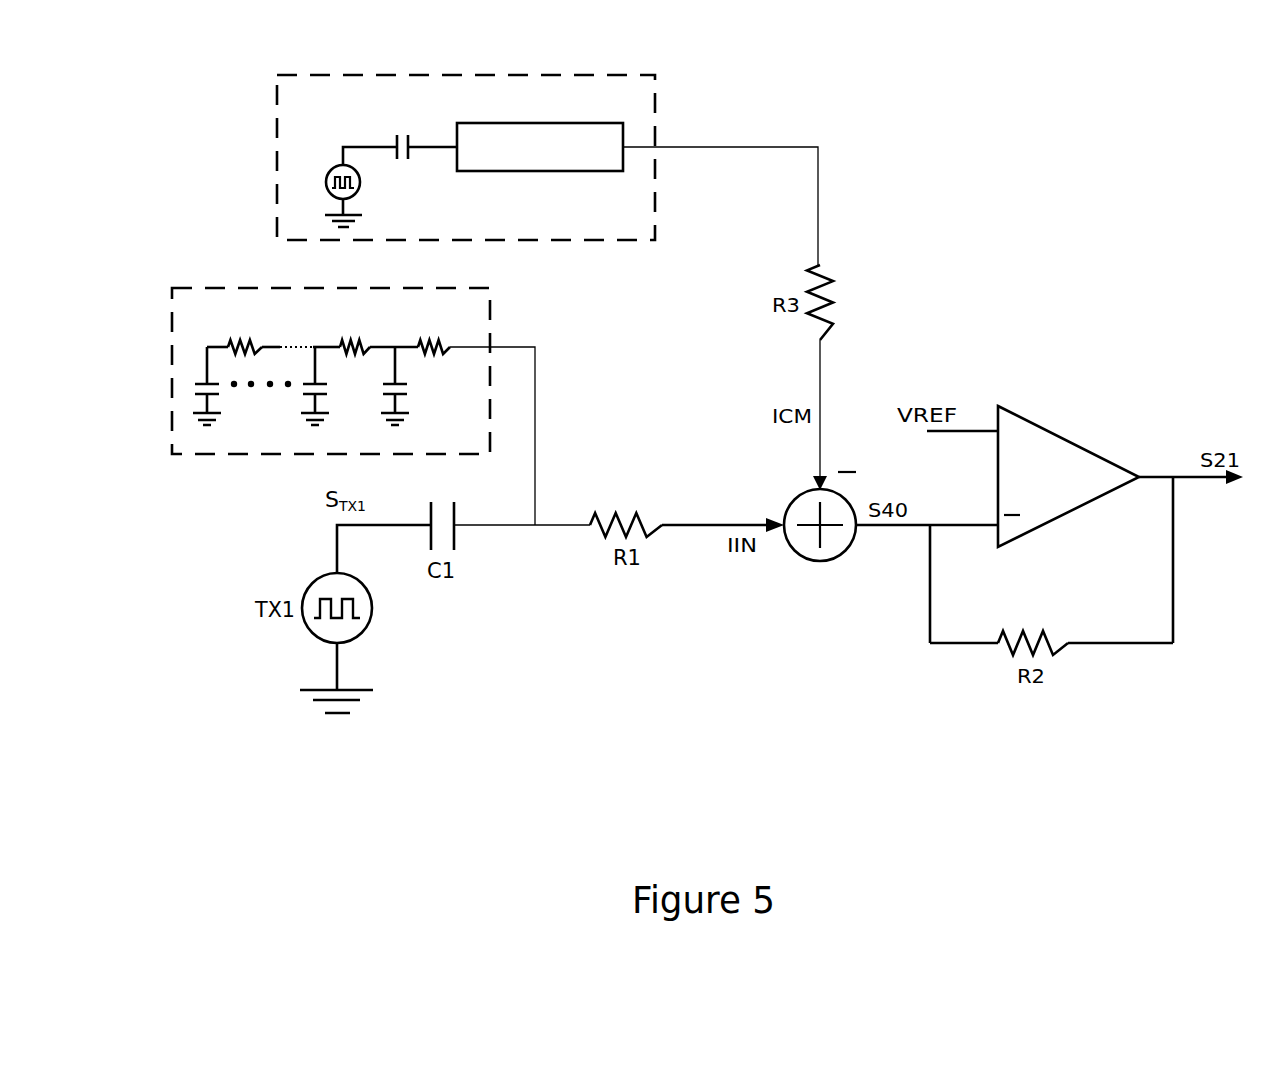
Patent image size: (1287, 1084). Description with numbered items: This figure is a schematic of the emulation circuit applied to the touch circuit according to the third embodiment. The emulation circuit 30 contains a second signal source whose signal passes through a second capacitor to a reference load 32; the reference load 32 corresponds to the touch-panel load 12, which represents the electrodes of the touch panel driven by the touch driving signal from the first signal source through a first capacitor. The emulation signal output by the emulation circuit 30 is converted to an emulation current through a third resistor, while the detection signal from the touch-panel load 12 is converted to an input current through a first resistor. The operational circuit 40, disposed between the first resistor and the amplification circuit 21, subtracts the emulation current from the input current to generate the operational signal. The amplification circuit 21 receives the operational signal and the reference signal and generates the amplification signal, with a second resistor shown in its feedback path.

The touch-panel load 12 is at (251, 288).
The amplification circuit 21 is at (1110, 462).
The emulation circuit 30 is at (276, 148).
The reference load 32 is at (593, 122).
The operational circuit 40 is at (807, 562).